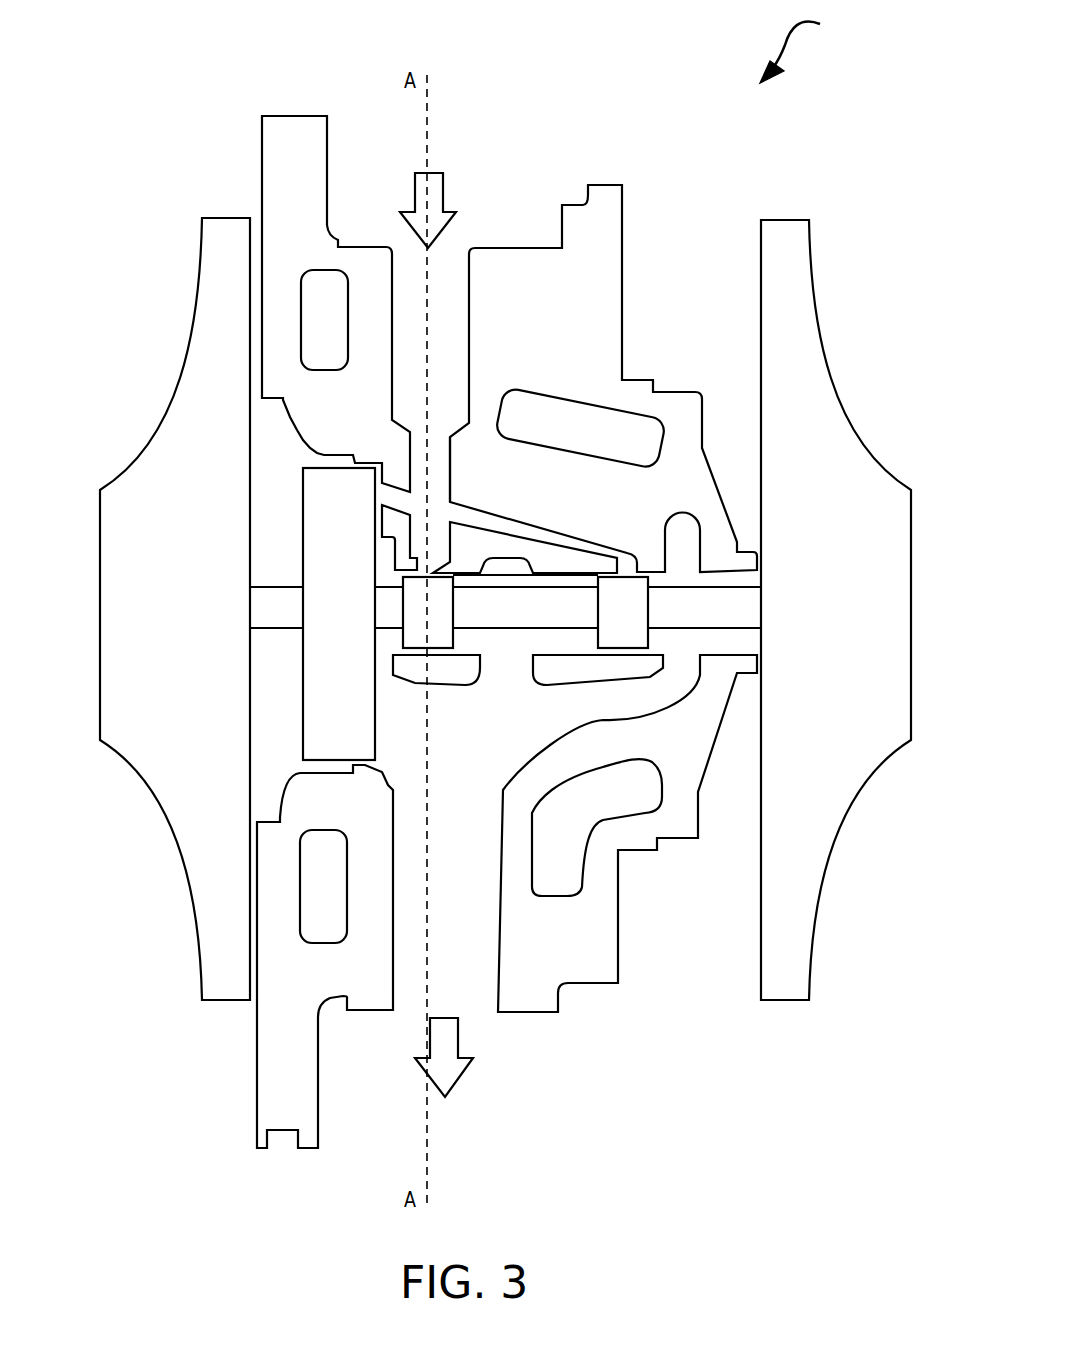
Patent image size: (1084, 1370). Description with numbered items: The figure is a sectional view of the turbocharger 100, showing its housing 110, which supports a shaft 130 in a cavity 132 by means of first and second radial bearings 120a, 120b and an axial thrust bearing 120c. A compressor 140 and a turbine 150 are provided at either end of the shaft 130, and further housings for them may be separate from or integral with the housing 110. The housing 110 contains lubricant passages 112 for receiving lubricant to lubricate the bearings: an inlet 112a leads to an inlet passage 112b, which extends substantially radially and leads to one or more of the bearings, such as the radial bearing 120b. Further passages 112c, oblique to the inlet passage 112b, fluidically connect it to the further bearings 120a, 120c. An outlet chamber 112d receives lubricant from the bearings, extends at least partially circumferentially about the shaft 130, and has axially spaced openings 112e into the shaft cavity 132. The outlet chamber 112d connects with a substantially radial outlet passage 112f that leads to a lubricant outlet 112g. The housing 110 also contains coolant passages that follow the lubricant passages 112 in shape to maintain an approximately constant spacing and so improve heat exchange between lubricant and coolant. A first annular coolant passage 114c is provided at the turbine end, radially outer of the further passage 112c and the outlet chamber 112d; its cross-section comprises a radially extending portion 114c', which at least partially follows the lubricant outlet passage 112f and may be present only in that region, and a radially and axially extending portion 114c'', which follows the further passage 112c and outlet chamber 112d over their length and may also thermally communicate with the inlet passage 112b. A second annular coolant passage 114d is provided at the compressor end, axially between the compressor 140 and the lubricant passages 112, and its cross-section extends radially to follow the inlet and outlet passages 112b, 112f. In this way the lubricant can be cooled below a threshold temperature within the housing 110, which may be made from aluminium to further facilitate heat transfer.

The turbocharger 100 is at (815, 46).
The housing 110 is at (597, 260).
The lubricant passages 112 is at (453, 290).
The inlet 112a is at (450, 253).
The inlet passage 112b is at (450, 343).
The further passages 112c is at (533, 537).
The outlet chamber 112d is at (510, 745).
The openings 112e is at (380, 673).
The outlet passage 112f is at (470, 973).
The lubricant outlet 112g is at (412, 1015).
The first annular coolant passage 114c is at (601, 636).
The radially extending portion 114c' is at (593, 861).
The radially and axially extending portion 114c'' is at (670, 552).
The second annular coolant passage 114d is at (330, 290).
The first radial bearing 120a is at (628, 597).
The second radial bearing 120b is at (440, 617).
The axial thrust bearing 120c is at (372, 622).
The shaft 130 is at (267, 612).
The cavity 132 is at (577, 580).
The compressor 140 is at (140, 492).
The turbine 150 is at (862, 492).